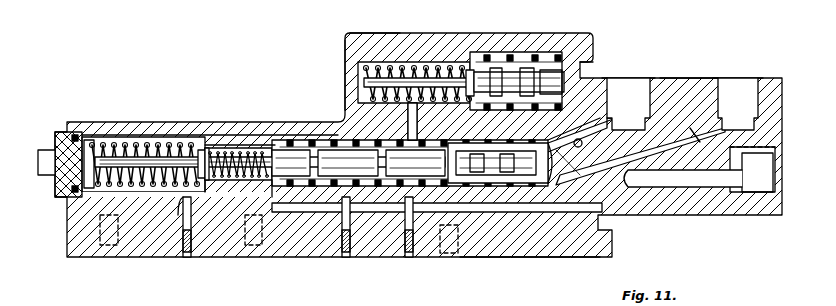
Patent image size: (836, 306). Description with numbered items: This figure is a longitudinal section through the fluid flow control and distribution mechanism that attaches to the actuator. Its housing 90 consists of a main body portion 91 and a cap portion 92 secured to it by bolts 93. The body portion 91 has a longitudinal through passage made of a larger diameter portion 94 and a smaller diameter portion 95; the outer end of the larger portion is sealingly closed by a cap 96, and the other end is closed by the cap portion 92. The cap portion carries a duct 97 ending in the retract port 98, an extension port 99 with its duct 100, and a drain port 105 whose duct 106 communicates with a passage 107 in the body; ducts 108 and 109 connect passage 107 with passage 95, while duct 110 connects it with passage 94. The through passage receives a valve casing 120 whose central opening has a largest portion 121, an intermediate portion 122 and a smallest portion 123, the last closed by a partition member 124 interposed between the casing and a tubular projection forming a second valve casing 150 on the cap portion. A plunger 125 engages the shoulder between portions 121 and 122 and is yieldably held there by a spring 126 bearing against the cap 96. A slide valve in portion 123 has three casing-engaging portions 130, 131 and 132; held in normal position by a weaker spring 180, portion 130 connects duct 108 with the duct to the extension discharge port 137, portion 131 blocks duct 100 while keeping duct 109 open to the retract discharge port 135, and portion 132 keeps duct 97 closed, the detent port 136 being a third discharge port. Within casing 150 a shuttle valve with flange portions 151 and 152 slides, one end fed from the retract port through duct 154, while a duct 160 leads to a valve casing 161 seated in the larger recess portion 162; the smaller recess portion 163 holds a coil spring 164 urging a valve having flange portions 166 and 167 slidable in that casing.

The housing 90 is at (330, 52).
The main body portion 91 is at (350, 50).
The cap portion 92 is at (692, 90).
The bolts 93 is at (586, 46).
The larger diameter portion 94 is at (138, 128).
The smaller diameter portion 95 is at (300, 140).
The cap 96 is at (62, 136).
The duct 97 is at (583, 144).
The retract port 98 is at (630, 92).
The extension port 99 is at (740, 92).
The duct 100 is at (760, 137).
The drain port 105 is at (760, 170).
The duct 106 is at (695, 182).
The passage 107 is at (530, 218).
The duct 108 is at (400, 203).
The duct 109 is at (330, 203).
The duct 110 is at (178, 197).
The valve casing 120 is at (232, 143).
The largest diameter opening 121 is at (80, 196).
The intermediate diameter portion 122 is at (216, 146).
The smallest diameter portion 123 is at (275, 150).
The partition member 124 is at (438, 148).
The plunger 125 is at (172, 152).
The spring 126 is at (122, 140).
The valve portion 130 is at (430, 177).
The valve portion 131 is at (362, 177).
The valve portion 132 is at (272, 200).
The retract discharge port 135 is at (105, 250).
The detent port 136 is at (254, 250).
The extension discharge port 137 is at (448, 256).
The valve casing 150 is at (468, 141).
The flange portion 151 is at (480, 176).
The flange portion 152 is at (506, 176).
The duct 154 is at (556, 162).
The duct 160 is at (520, 128).
The valve casing 161 is at (546, 78).
The larger diameter portion 162 is at (528, 78).
The smaller diameter portion 163 is at (428, 66).
The coil spring 164 is at (380, 66).
The flange portion 166 is at (490, 78).
The flange portion 167 is at (540, 62).
The spring 180 is at (218, 186).